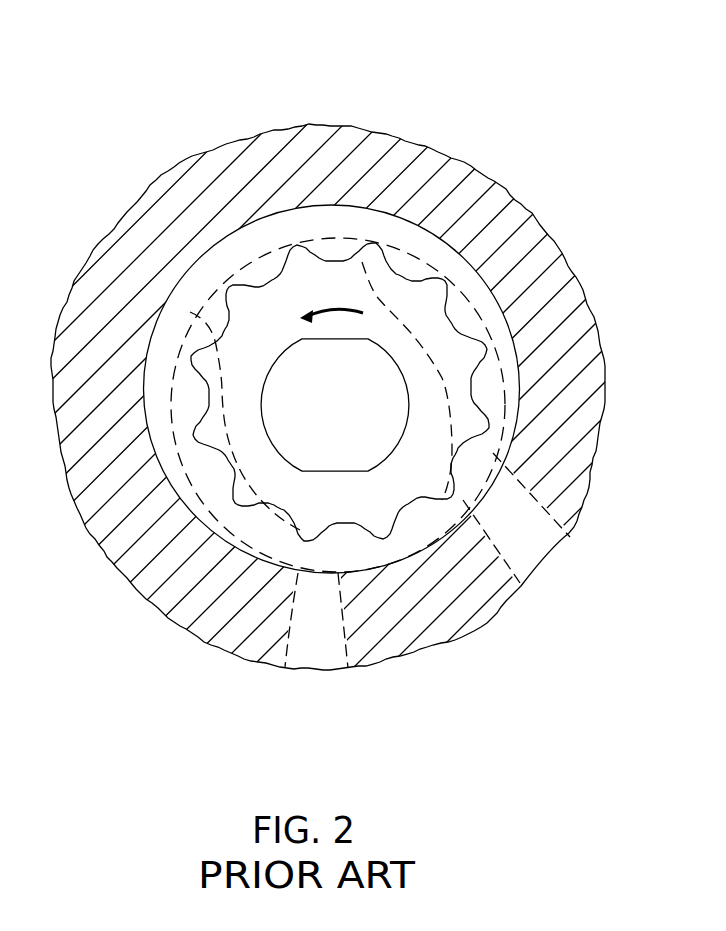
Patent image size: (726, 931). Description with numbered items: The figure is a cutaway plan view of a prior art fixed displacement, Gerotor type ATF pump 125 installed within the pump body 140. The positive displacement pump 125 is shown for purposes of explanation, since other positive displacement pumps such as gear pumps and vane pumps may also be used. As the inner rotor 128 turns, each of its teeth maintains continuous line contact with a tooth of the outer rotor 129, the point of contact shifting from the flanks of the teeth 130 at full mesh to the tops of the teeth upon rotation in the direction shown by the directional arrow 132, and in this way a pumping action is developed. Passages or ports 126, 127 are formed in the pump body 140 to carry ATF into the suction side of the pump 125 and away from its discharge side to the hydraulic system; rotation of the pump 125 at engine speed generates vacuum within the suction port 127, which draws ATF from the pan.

The positive displacement pump 125 is at (416, 132).
The passage or port 126 is at (315, 650).
The suction port 127 is at (549, 550).
The inner rotor 128 is at (360, 505).
The outer rotor 129 is at (212, 270).
The teeth 130 is at (338, 261).
The directional arrow 132 is at (331, 317).
The pump body 140 is at (464, 612).